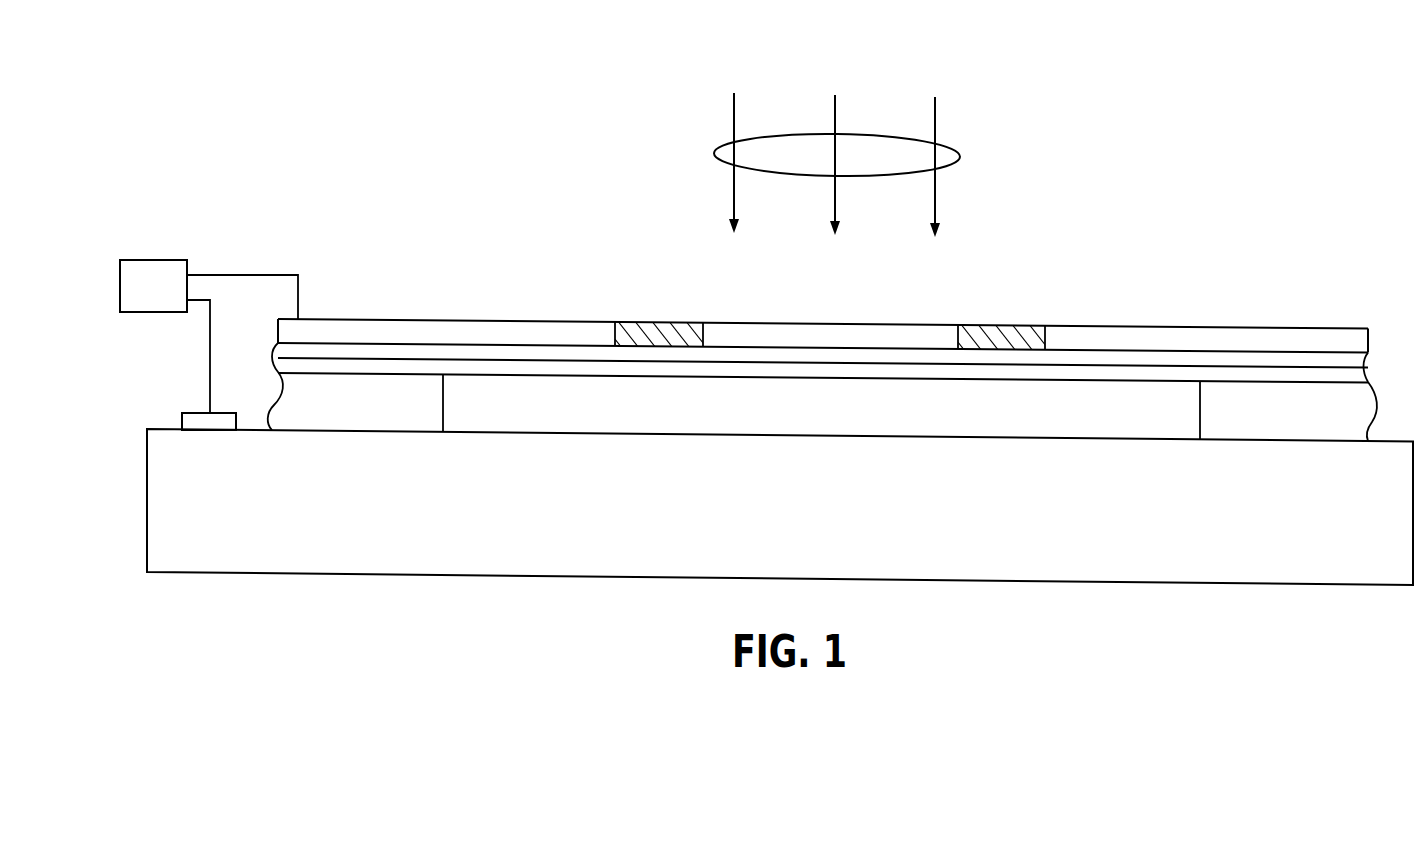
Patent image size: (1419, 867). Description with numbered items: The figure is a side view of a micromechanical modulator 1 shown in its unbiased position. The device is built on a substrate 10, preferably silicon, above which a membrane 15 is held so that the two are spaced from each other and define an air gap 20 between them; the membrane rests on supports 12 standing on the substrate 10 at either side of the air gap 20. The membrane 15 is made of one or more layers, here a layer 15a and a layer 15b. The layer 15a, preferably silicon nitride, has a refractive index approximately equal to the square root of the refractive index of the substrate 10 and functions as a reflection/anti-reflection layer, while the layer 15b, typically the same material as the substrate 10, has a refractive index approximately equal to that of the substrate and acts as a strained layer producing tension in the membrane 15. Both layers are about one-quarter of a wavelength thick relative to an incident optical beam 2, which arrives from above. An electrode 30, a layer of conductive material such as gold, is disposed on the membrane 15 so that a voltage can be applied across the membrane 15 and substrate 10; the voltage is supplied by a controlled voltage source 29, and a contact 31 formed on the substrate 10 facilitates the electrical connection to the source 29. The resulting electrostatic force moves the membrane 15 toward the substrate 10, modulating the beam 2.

The micromechanical modulator 1 is at (366, 98).
The incident optical beam 2 is at (725, 143).
The substrate 10 is at (782, 517).
The support layer 12 is at (380, 414).
The membrane 15 is at (848, 345).
The layer 15a is at (575, 350).
The layer 15b is at (548, 367).
The air gap 20 is at (842, 422).
The controlled voltage source 29 is at (150, 260).
The electrode 30 is at (437, 328).
The contact 31 is at (188, 412).